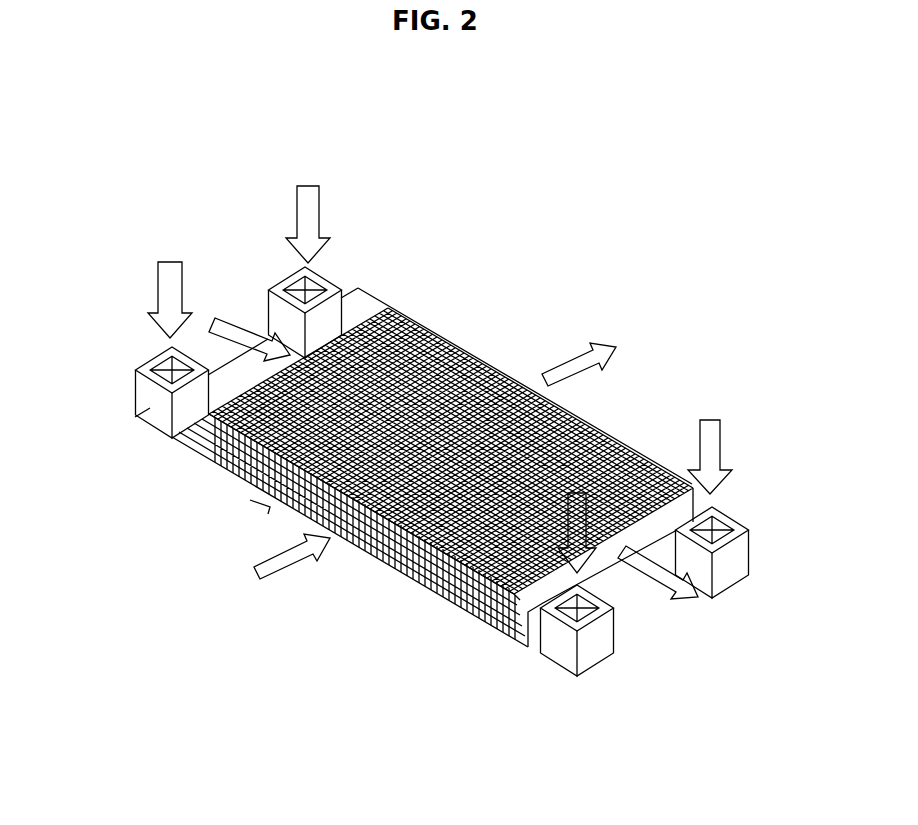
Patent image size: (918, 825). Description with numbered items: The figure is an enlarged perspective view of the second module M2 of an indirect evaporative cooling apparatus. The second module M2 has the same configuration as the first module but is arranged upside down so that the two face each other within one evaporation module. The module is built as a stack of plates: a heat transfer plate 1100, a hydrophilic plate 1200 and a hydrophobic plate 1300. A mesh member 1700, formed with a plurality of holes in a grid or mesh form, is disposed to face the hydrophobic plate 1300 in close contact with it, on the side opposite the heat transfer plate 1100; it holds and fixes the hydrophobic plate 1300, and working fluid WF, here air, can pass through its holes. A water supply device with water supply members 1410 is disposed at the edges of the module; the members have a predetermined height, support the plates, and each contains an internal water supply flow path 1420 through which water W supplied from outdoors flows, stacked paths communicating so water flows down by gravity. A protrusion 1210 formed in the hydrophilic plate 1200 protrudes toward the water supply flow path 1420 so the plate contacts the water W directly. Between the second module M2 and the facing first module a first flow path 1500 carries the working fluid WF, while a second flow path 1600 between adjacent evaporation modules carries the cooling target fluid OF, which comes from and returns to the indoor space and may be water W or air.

The heat transfer plate 1100 is at (237, 470).
The hydrophilic plate 1200 is at (350, 545).
The protrusion 1210 is at (133, 380).
The hydrophobic plate 1300 is at (423, 576).
The water supply member 1410 is at (750, 547).
The water supply flow path 1420 is at (293, 298).
The first flow path 1500 is at (580, 490).
The second flow path 1600 is at (250, 500).
The mesh member 1700 is at (390, 304).
The second module M2 is at (530, 258).
The water W is at (440, 325).
The working fluid WF is at (445, 462).
The cooling target fluid OF is at (451, 454).